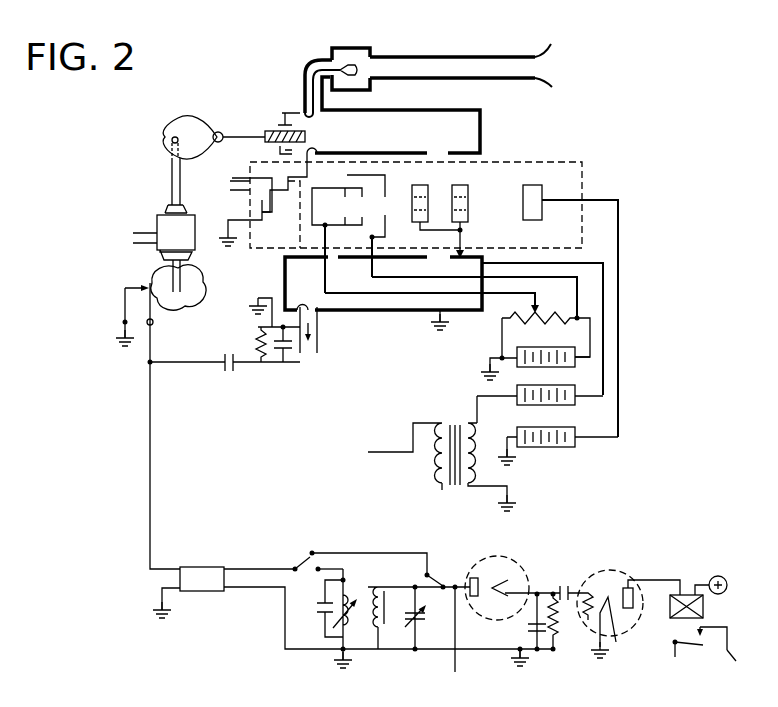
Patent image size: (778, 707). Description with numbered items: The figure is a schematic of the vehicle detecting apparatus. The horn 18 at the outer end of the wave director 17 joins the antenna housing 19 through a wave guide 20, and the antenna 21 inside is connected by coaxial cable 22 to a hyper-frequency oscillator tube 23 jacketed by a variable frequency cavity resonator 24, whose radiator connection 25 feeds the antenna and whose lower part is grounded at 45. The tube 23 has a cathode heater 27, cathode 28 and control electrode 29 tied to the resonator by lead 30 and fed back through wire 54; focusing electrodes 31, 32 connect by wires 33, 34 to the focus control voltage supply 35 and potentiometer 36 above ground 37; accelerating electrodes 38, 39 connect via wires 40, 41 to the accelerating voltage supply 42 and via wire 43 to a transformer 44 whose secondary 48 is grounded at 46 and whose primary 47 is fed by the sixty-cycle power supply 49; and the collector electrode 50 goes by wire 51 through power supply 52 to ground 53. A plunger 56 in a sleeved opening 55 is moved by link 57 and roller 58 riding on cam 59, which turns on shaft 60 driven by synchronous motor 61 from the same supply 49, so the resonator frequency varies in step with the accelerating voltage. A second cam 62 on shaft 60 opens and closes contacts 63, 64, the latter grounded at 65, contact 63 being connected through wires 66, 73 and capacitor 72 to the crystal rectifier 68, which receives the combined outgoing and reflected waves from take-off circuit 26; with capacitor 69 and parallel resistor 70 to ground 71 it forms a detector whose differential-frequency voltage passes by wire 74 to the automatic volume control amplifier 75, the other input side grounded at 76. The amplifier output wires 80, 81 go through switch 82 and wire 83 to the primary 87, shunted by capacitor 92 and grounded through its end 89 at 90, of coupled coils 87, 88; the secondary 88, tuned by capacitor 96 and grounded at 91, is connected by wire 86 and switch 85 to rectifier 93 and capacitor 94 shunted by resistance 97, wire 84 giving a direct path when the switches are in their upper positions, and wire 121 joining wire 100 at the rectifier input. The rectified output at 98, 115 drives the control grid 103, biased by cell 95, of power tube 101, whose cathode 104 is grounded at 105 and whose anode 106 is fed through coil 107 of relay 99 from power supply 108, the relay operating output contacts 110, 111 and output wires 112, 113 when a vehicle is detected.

The wave director 17 is at (418, 37).
The horn 18 is at (533, 54).
The antenna housing 19 is at (345, 89).
The wave guide 20 is at (457, 79).
The antenna 21 is at (353, 64).
The coaxial cable 22 is at (308, 67).
The hyper-frequency oscillator tube 23 is at (592, 176).
The variable frequency cavity resonator 24 is at (481, 135).
The radiator coaxial cable connection 25 is at (300, 114).
The take-off circuit 26 is at (312, 312).
The cathode heater 27 is at (266, 202).
The cathode 28 is at (286, 220).
The control electrode 29 is at (300, 228).
The lead 30 is at (318, 153).
The focusing electrode 31 is at (328, 232).
The focusing electrode 32 is at (386, 237).
The wire 33 is at (380, 296).
The wire 34 is at (435, 280).
The focus control voltage supply 35 is at (577, 368).
The potentiometer 36 is at (542, 318).
The ground 37 is at (488, 370).
The accelerating electrode 38 is at (428, 192).
The accelerating electrode 39 is at (468, 192).
The wire 40 is at (457, 238).
The wire 41 is at (605, 318).
The accelerating voltage supply 42 is at (577, 408).
The wire 43 is at (478, 396).
The transformer 44 is at (452, 428).
The ground 45 is at (446, 327).
The ground 46 is at (512, 510).
The primary 47 is at (435, 490).
The secondary 48 is at (469, 490).
The sixty cycle A. C. power supply 49 is at (103, 233).
The collector electrode 50 is at (543, 192).
The wire 51 is at (619, 250).
The power supply 52 is at (577, 448).
The ground 53 is at (512, 463).
The wire 54 is at (310, 170).
The sleeved opening 55 is at (279, 152).
The plunger 56 is at (273, 130).
The shaft or link 57 is at (247, 137).
The roller 58 is at (217, 131).
The cam 59 is at (180, 117).
The shaft 60 is at (171, 184).
The synchronous motor 61 is at (157, 228).
The cam 62 is at (186, 308).
The contact 63 is at (149, 286).
The contact 64 is at (125, 292).
The ground 65 is at (118, 344).
The wire 66 is at (152, 357).
The rectifier 68 is at (313, 352).
The capacitor 69 is at (279, 350).
The resistor 70 is at (259, 340).
The ground 71 is at (254, 304).
The capacitor 72 is at (226, 371).
The wire 73 is at (183, 363).
The wire 74 is at (146, 462).
The automatic volume control type amplifier 75 is at (210, 568).
The ground 76 is at (168, 617).
The wire 80 is at (274, 569).
The wire 81 is at (274, 587).
The switch 82 is at (297, 569).
The wire 83 is at (317, 571).
The wire 84 is at (365, 553).
The switch 85 is at (431, 576).
The wire 86 is at (388, 597).
The primary coil 87 is at (346, 581).
The secondary coil 88 is at (380, 592).
The other end of the primary 89 is at (345, 648).
The ground 90 is at (336, 666).
The ground 91 is at (517, 670).
The capacitor 92 is at (322, 611).
The rectifier 93 is at (506, 561).
The capacitor 94 is at (530, 631).
The cell 95 is at (562, 586).
The tuning capacitor 96 is at (422, 618).
The resistance 97 is at (559, 622).
The output connection 98 is at (545, 590).
The output relay 99 is at (670, 560).
The wire 100 is at (453, 583).
The output power tube 101 is at (590, 576).
The control grid 103 is at (592, 598).
The cathode 104 is at (614, 612).
The ground 105 is at (600, 662).
The anode 106 is at (630, 586).
The coil 107 is at (704, 604).
The power supply 108 is at (718, 576).
The output contact 110 is at (700, 648).
The output contact 111 is at (728, 628).
The output wire 112 is at (672, 656).
The output wire 113 is at (736, 658).
The rectified output connection 115 is at (553, 651).
The wire 121 is at (456, 670).